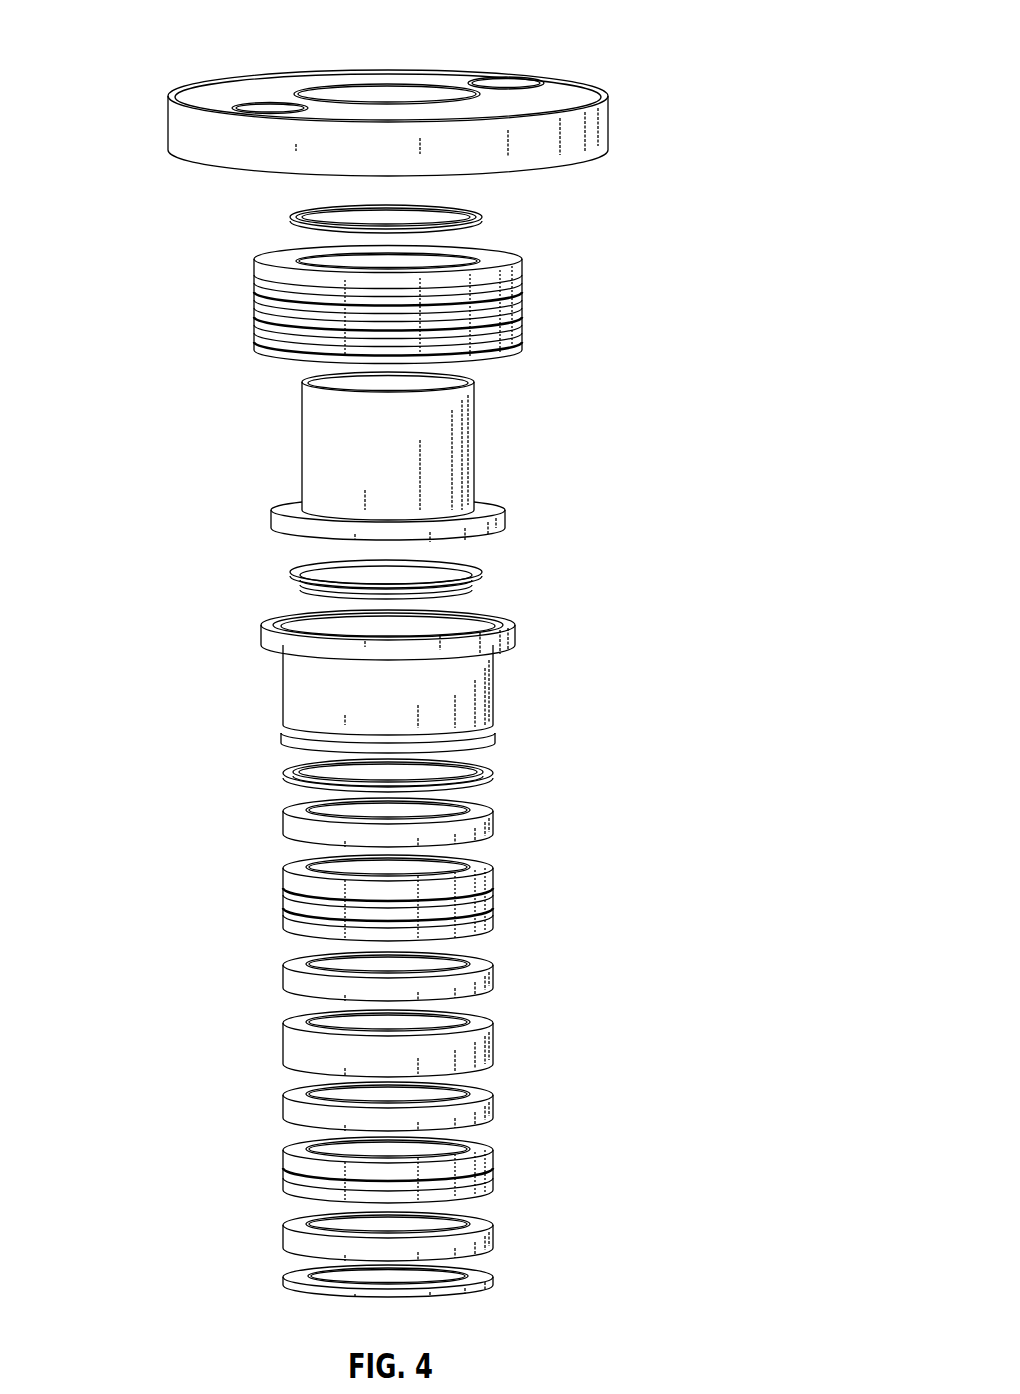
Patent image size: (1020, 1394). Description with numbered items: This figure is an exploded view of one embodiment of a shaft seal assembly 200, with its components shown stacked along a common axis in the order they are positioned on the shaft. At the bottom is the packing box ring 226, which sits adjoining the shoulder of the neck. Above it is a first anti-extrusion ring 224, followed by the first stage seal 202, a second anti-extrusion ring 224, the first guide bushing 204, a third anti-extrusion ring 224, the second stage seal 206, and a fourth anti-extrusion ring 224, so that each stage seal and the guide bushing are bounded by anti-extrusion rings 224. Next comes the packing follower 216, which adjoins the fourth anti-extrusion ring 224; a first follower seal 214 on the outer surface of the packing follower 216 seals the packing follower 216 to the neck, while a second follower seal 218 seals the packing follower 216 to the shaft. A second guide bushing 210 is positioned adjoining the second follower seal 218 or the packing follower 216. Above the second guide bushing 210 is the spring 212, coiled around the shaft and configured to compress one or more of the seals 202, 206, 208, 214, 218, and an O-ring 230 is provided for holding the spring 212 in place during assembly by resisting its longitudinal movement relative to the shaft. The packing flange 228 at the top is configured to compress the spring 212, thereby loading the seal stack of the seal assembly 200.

The seal assembly 200 is at (630, 34).
The packing flange 228 is at (611, 127).
The O-ring 230 is at (486, 222).
The spring 212 is at (523, 296).
The second guide bushing 210 is at (476, 447).
The second follower seal 218 is at (496, 577).
The seal 208 is at (291, 574).
The packing follower 216 is at (497, 690).
The first follower seal 214 is at (506, 778).
The anti-extrusion ring 224 is at (283, 822).
The second stage seal 206 is at (495, 895).
The first guide bushing 204 is at (495, 1040).
The first stage seal 202 is at (495, 1170).
The packing box ring 226 is at (495, 1282).